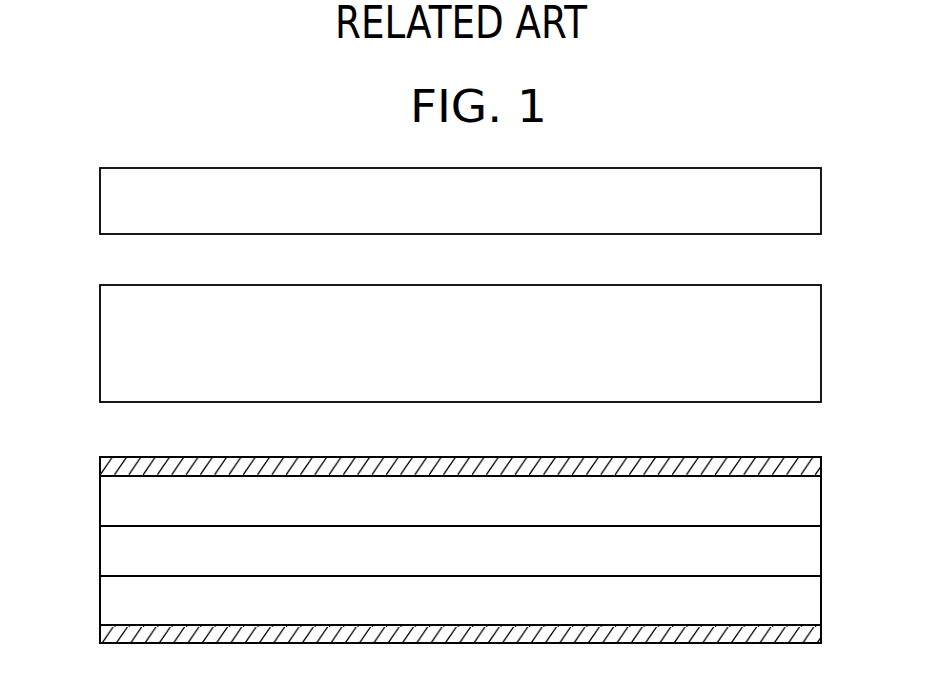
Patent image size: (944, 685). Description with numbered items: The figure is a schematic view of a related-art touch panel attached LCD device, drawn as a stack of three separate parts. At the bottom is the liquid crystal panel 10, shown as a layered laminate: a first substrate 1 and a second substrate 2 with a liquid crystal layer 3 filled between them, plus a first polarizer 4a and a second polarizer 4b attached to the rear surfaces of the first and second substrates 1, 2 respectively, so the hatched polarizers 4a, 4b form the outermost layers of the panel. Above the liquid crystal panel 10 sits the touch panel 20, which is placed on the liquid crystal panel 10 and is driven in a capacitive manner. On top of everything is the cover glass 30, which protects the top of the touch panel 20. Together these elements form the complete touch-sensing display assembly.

The cover glass 30 is at (117, 207).
The touch panel 20 is at (116, 346).
The liquid crystal panel 10 is at (459, 553).
The second polarizer 4b is at (117, 466).
The second substrate 2 is at (117, 504).
The liquid crystal layer 3 is at (117, 551).
The first substrate 1 is at (117, 600).
The first polarizer 4a is at (117, 636).